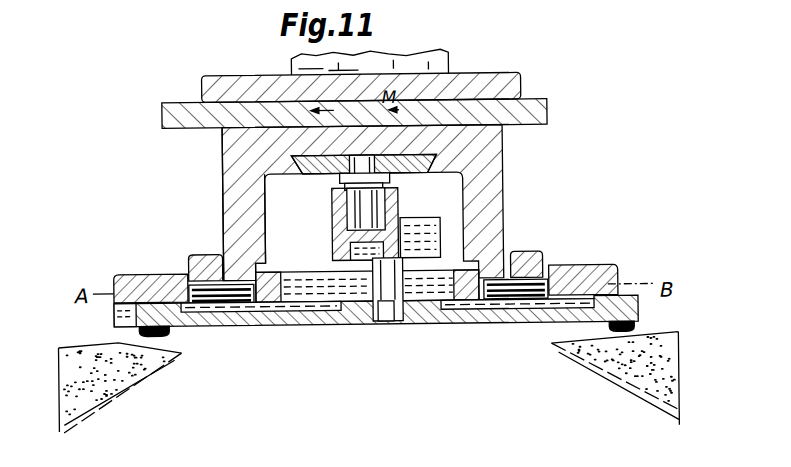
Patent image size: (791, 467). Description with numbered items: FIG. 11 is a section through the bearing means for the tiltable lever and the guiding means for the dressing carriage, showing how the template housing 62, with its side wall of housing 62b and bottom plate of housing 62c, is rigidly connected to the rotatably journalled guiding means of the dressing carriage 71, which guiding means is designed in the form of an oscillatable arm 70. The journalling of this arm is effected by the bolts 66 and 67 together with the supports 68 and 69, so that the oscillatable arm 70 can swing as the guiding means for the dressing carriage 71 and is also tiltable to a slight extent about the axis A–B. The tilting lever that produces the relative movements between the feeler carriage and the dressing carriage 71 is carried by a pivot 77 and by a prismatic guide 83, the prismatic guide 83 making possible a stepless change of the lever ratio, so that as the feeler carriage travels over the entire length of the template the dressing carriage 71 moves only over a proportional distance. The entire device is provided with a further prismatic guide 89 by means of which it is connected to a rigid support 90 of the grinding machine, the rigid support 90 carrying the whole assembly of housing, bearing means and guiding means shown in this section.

The rigid support 90 is at (512, 86).
The prismatic guide 89 is at (549, 107).
The template housing 62 is at (490, 157).
The side wall of housing 62b is at (235, 192).
The bottom plate of housing 62c is at (483, 273).
The prismatic guide 83 is at (307, 164).
The pivot 77 is at (360, 203).
The support 68 is at (207, 253).
The support 69 is at (540, 254).
The oscillatable arm 70 is at (147, 280).
The bolt 67 is at (552, 270).
The bolt 66 is at (198, 281).
The dressing carriage 71 is at (352, 323).